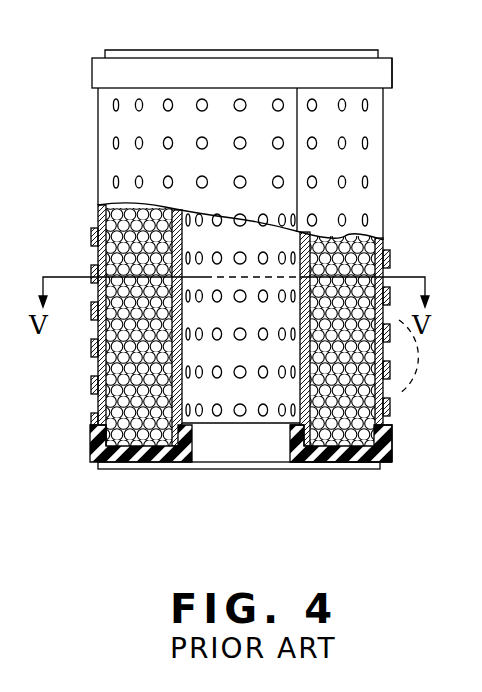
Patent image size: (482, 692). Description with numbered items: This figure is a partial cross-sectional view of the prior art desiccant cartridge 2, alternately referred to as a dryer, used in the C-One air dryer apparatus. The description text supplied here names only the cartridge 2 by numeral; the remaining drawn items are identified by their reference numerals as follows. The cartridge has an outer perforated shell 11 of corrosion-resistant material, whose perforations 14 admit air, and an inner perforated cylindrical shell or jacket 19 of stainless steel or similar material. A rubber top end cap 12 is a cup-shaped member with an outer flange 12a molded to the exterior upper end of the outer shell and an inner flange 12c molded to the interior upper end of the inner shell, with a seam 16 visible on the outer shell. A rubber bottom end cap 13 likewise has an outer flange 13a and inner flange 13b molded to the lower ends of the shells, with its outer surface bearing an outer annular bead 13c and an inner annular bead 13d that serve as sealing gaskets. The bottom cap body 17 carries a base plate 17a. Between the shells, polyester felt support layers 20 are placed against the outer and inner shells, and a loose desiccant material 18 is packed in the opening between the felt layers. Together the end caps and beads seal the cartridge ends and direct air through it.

The desiccant cartridge 2 is at (98, 125).
The outer shell wall 11 is at (99, 240).
The top cap 12 is at (240, 62).
The top cap side wall 12a is at (393, 60).
The top cap flange 12c is at (145, 52).
The bottom cap 13 is at (348, 462).
The bottom cap outer lip 13a is at (390, 446).
The bottom cap inner lip 13b is at (296, 435).
The bottom cap outer lip (left) 13c is at (100, 468).
The bottom cap base 13d is at (312, 470).
The perforations 14 is at (344, 108).
The seam 16 is at (298, 88).
The bottom cap body 17 is at (140, 462).
The bottom plate 17a is at (239, 418).
The bead filling 18 is at (106, 226).
The inner perforated tube 19 is at (186, 465).
The corrugations 20 is at (100, 410).